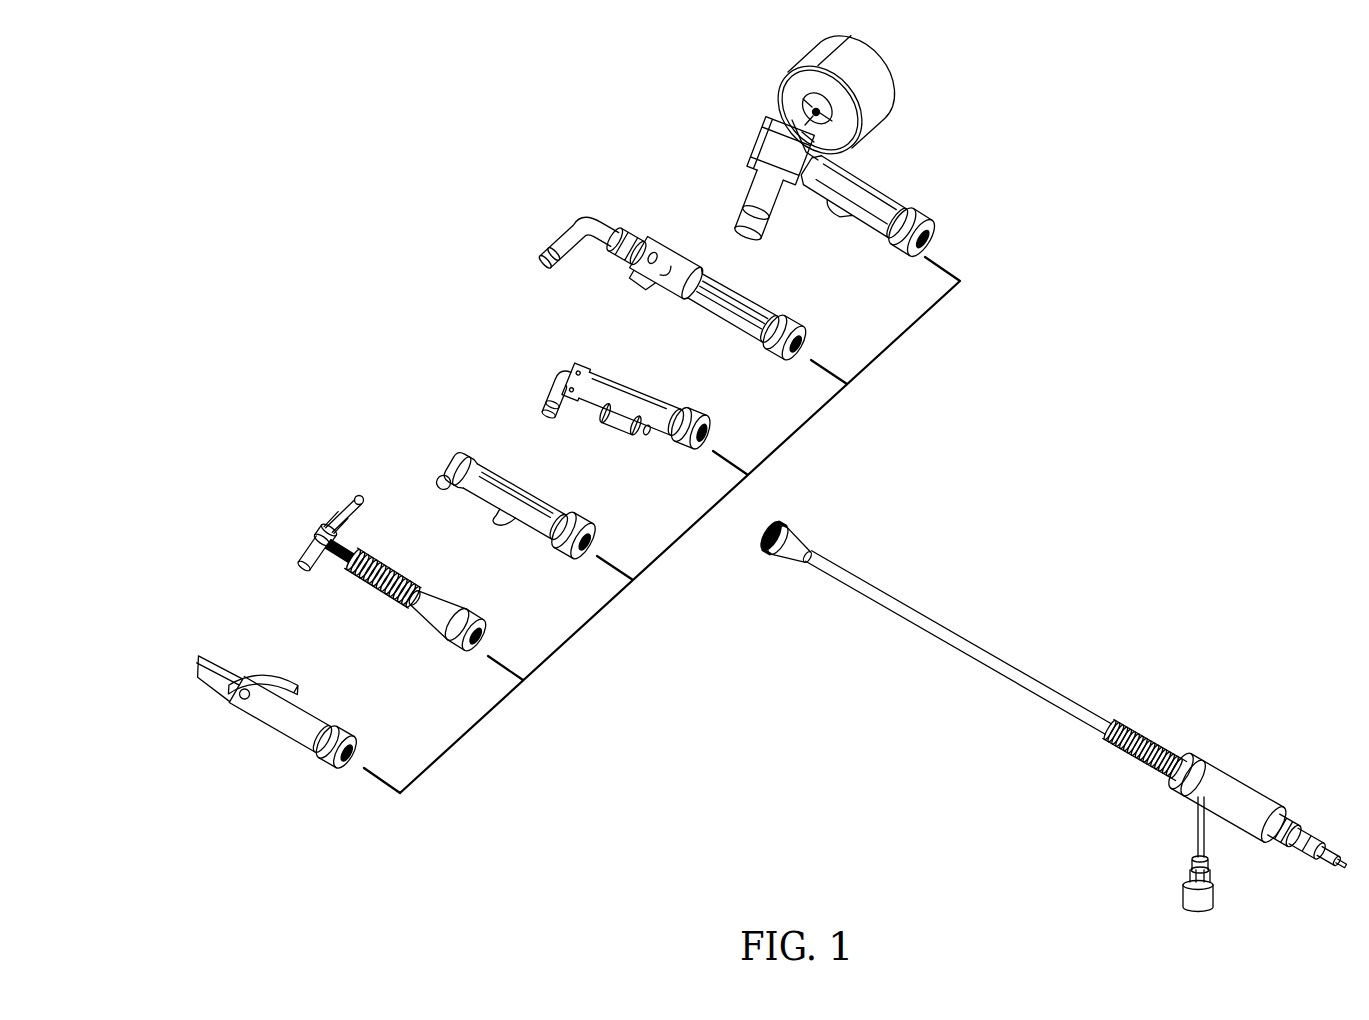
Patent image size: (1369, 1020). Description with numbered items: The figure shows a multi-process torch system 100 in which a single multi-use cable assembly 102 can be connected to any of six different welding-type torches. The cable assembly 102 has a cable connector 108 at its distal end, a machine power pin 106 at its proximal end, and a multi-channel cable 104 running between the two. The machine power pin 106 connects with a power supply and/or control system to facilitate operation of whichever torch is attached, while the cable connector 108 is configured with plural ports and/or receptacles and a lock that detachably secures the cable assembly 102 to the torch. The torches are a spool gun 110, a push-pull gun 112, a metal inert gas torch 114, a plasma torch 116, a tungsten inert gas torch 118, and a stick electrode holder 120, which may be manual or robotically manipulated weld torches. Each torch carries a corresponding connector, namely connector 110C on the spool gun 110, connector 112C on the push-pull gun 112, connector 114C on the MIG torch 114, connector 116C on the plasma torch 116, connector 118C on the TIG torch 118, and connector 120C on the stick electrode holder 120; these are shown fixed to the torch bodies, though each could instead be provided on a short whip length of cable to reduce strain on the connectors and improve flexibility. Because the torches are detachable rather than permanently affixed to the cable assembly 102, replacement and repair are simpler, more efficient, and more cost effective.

The system 100 is at (249, 163).
The multi-use cable assembly 102 is at (923, 781).
The multi-channel cable 104 is at (968, 636).
The machine power pin 106 is at (1240, 782).
The cable connector 108 is at (800, 538).
The spool gun 110 is at (772, 125).
The connector 110C is at (898, 264).
The push-pull gun 112 is at (570, 230).
The connector 112C is at (774, 380).
The metal inert gas torch 114 is at (565, 378).
The connector 114C is at (671, 468).
The plasma torch 116 is at (442, 452).
The connector 116C is at (556, 577).
The tungsten inert gas torch 118 is at (349, 508).
The connector 118C is at (451, 669).
The stick electrode holder 120 is at (200, 662).
The connector 120C is at (320, 784).